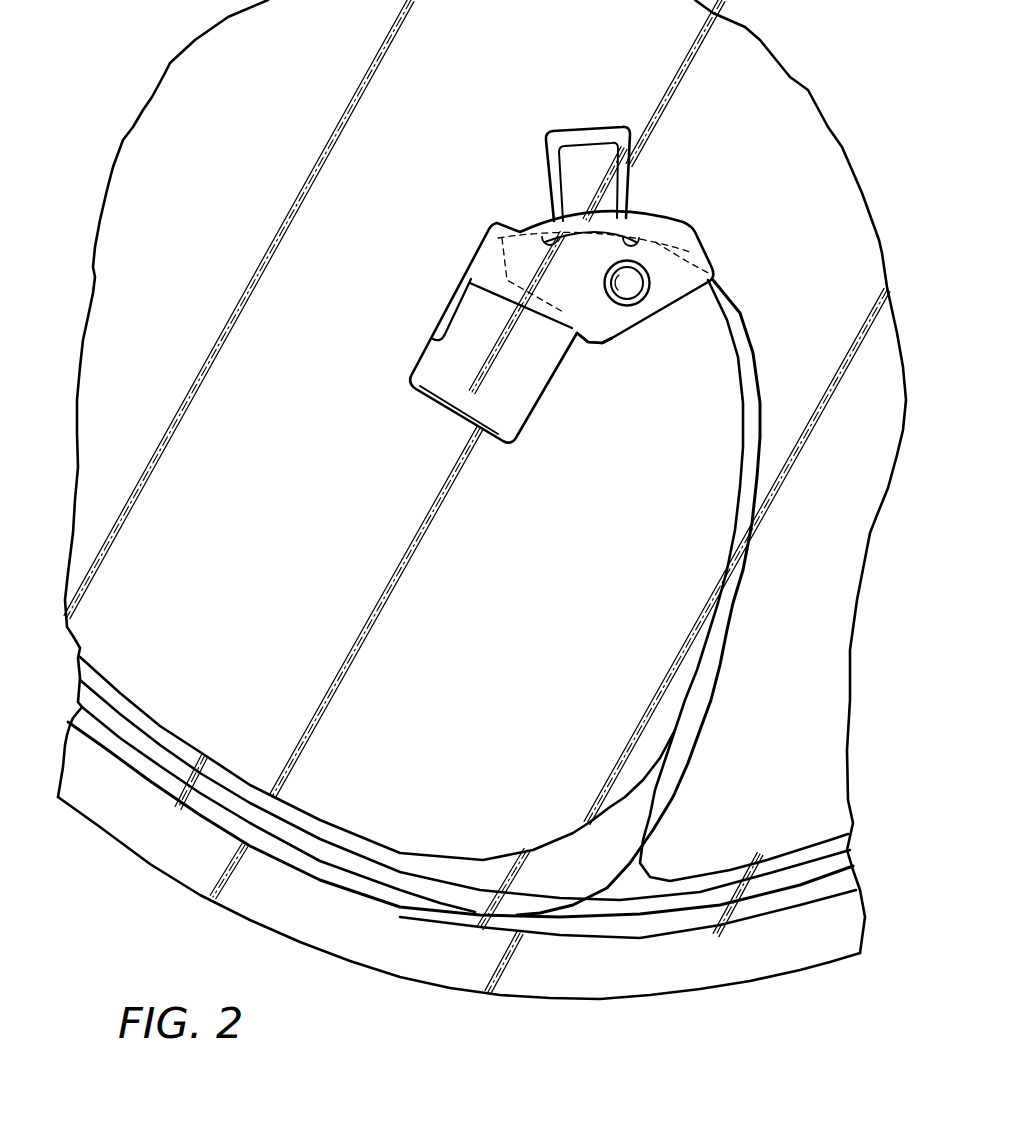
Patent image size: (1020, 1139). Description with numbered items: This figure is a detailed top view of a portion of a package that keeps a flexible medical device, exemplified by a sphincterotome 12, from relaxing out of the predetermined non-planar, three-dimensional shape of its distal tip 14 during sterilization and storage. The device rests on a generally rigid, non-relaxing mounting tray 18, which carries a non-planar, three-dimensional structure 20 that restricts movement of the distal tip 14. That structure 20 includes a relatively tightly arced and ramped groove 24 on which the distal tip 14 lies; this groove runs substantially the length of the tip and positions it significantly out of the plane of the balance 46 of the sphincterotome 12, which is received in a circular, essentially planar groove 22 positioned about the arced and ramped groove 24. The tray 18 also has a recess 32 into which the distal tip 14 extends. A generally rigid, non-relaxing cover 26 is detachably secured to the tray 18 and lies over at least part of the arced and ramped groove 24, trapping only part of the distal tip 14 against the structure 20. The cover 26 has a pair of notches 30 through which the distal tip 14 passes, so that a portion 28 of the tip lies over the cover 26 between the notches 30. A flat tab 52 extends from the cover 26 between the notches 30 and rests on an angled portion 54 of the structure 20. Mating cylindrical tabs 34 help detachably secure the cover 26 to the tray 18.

The sphincterotome 12 is at (600, 870).
The distal tip 14 is at (440, 337).
The mounting tray 18 is at (224, 243).
The non-planar, three-dimensional structure 20 is at (520, 218).
The circular groove 22 is at (182, 753).
The arced and ramped groove 24 is at (640, 777).
The cover 26 is at (598, 347).
The portion of the distal tip 28 is at (610, 212).
The notches 30 is at (552, 236).
The recess 32 is at (465, 397).
The cylindrical tabs 34 is at (643, 295).
The balance of the sphincterotome 46 is at (217, 795).
The flat tab 52 is at (590, 150).
The angled portion 54 is at (556, 131).